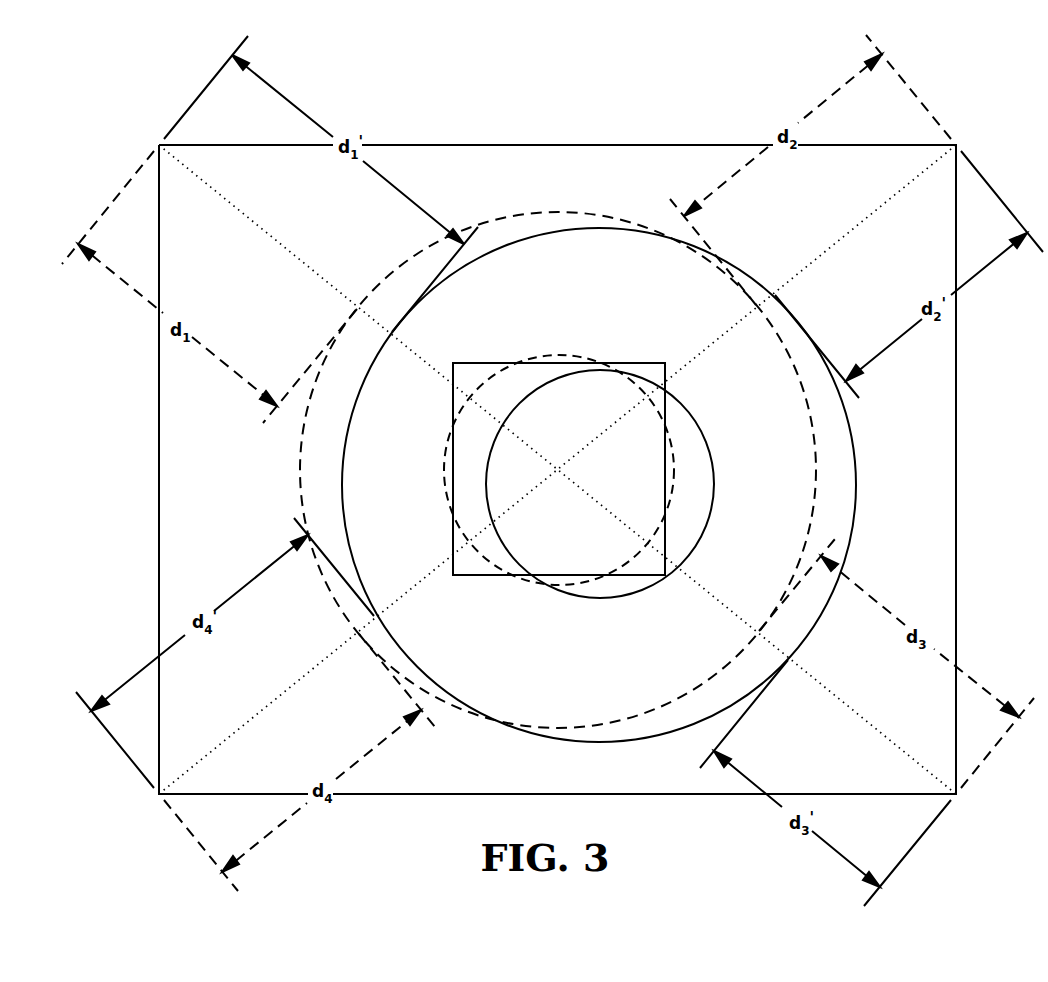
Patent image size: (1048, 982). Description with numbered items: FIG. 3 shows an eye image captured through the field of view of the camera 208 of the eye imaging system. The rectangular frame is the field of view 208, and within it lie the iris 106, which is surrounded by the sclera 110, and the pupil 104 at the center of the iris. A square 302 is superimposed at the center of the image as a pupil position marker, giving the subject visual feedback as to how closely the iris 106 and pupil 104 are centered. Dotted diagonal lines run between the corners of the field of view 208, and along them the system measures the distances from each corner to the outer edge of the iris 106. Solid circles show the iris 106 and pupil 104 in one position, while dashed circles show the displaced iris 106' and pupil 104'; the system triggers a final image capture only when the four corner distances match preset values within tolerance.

The pupil 104 is at (559, 457).
The pupil 104' is at (626, 484).
The iris 106 is at (599, 462).
The iris 106' is at (606, 470).
The square 302 is at (563, 456).
The field of view device 208 is at (596, 469).
The sclera 110 is at (589, 469).